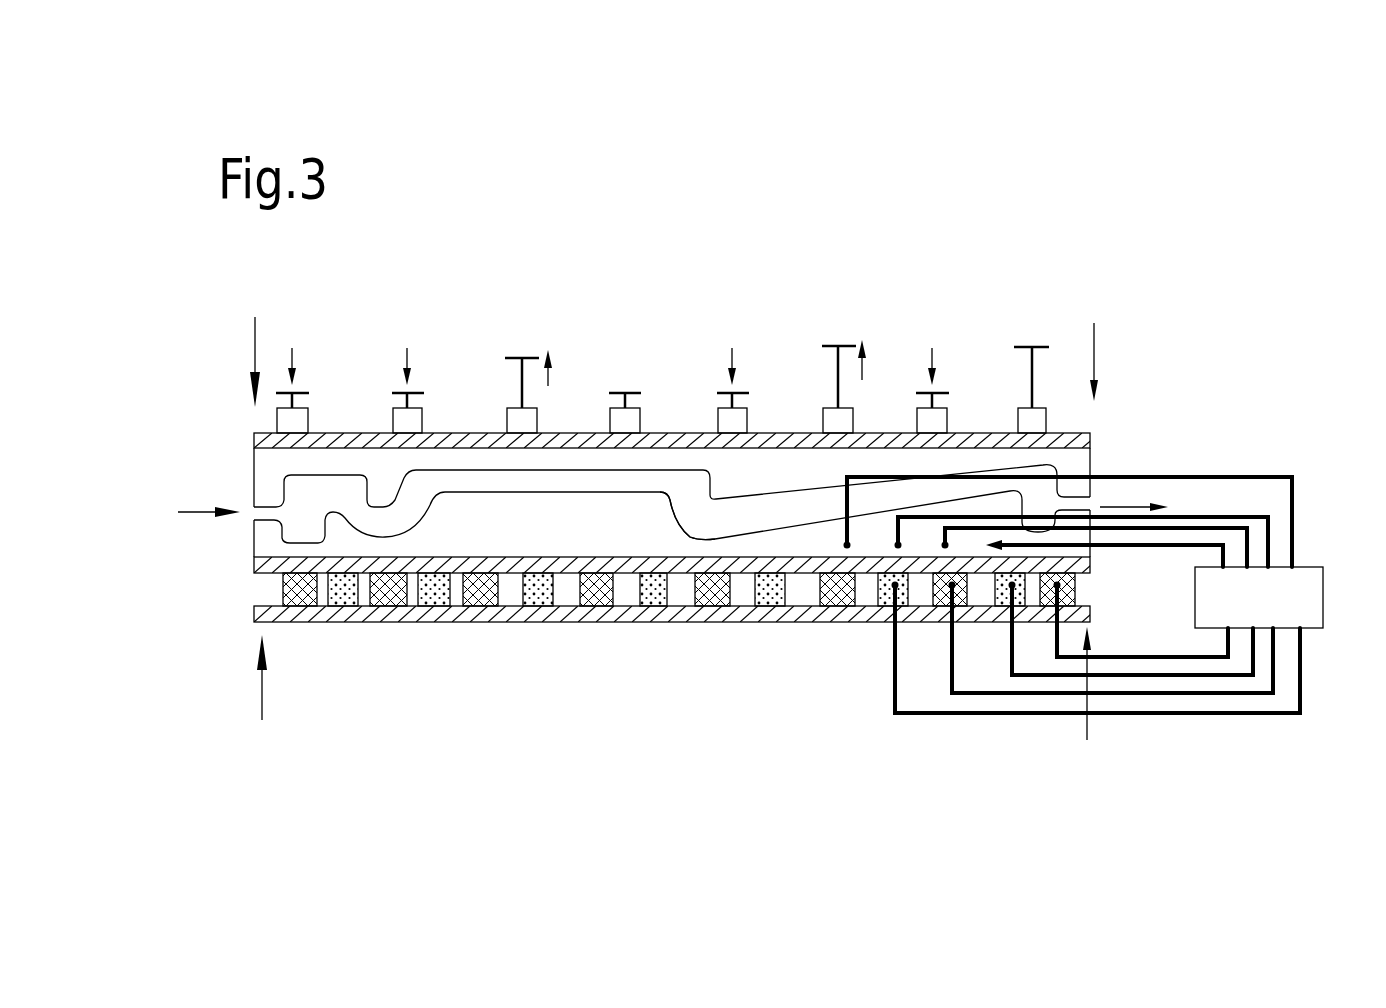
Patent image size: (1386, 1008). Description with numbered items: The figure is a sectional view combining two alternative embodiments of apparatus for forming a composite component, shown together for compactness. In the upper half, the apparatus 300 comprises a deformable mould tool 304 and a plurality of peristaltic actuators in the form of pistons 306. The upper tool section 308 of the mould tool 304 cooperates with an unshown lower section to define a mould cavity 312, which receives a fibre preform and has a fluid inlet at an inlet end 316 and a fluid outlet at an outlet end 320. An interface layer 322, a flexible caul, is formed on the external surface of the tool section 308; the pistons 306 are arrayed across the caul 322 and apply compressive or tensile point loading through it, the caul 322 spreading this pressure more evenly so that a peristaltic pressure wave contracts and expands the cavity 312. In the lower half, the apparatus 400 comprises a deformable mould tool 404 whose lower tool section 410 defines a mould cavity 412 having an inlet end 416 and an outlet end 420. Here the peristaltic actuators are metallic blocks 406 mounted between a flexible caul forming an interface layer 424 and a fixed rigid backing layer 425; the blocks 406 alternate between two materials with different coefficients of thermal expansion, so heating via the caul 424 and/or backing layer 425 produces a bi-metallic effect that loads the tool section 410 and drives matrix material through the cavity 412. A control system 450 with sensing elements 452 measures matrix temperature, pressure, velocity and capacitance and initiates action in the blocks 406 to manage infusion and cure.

The apparatus 300 is at (757, 252).
The deformable mould tool 304 is at (1100, 436).
The pistons 306 is at (292, 418).
The first tool section 308 is at (789, 485).
The mould cavity 312 is at (567, 483).
The inlet end 316 is at (255, 344).
The outlet end 320 is at (1098, 346).
The interface layer 322 is at (795, 440).
The apparatus 400 is at (671, 757).
The deformable mould tool 404 is at (240, 557).
The metallic blocks 406 is at (583, 622).
The second tool section 410 is at (540, 542).
The mould cavity 412 is at (703, 522).
The inlet end 416 is at (260, 698).
The outlet end 420 is at (1086, 717).
The interface layer 424 is at (413, 567).
The fixed rigid backing layer 425 is at (340, 622).
The control system 450 is at (1330, 507).
The sensing elements 452 is at (1008, 588).